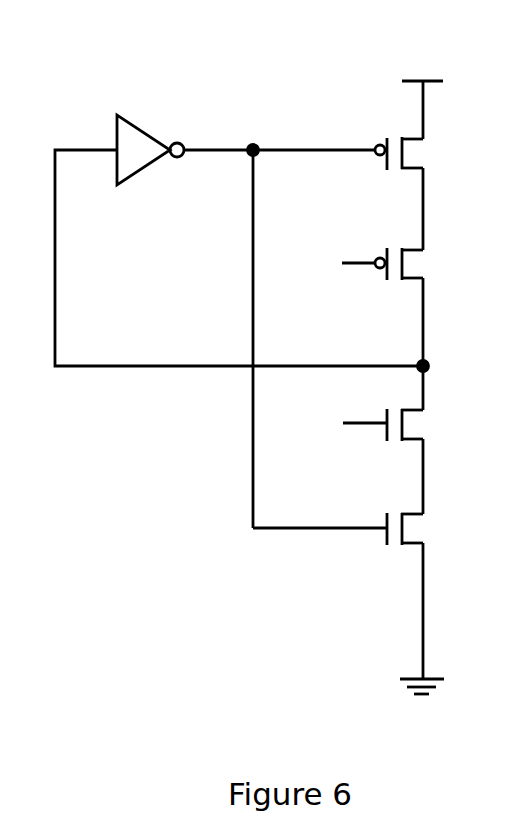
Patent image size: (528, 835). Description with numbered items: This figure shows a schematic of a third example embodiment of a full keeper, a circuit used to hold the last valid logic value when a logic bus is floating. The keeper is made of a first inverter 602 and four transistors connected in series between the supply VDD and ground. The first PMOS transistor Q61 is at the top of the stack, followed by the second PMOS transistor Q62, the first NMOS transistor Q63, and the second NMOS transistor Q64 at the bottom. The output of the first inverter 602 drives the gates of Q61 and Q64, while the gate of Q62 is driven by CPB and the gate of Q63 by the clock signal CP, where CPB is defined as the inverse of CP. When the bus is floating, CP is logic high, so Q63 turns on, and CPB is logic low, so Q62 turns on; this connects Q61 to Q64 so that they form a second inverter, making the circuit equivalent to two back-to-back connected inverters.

The first inverter 602 is at (157, 172).
The element VDD is at (417, 86).
The first PMOS transistor Q61 is at (424, 193).
The second PMOS transistor Q62 is at (424, 307).
The first NMOS transistor Q63 is at (430, 440).
The second NMOS transistor Q64 is at (363, 596).
The element CPB is at (332, 250).
The clock signal CP is at (342, 432).